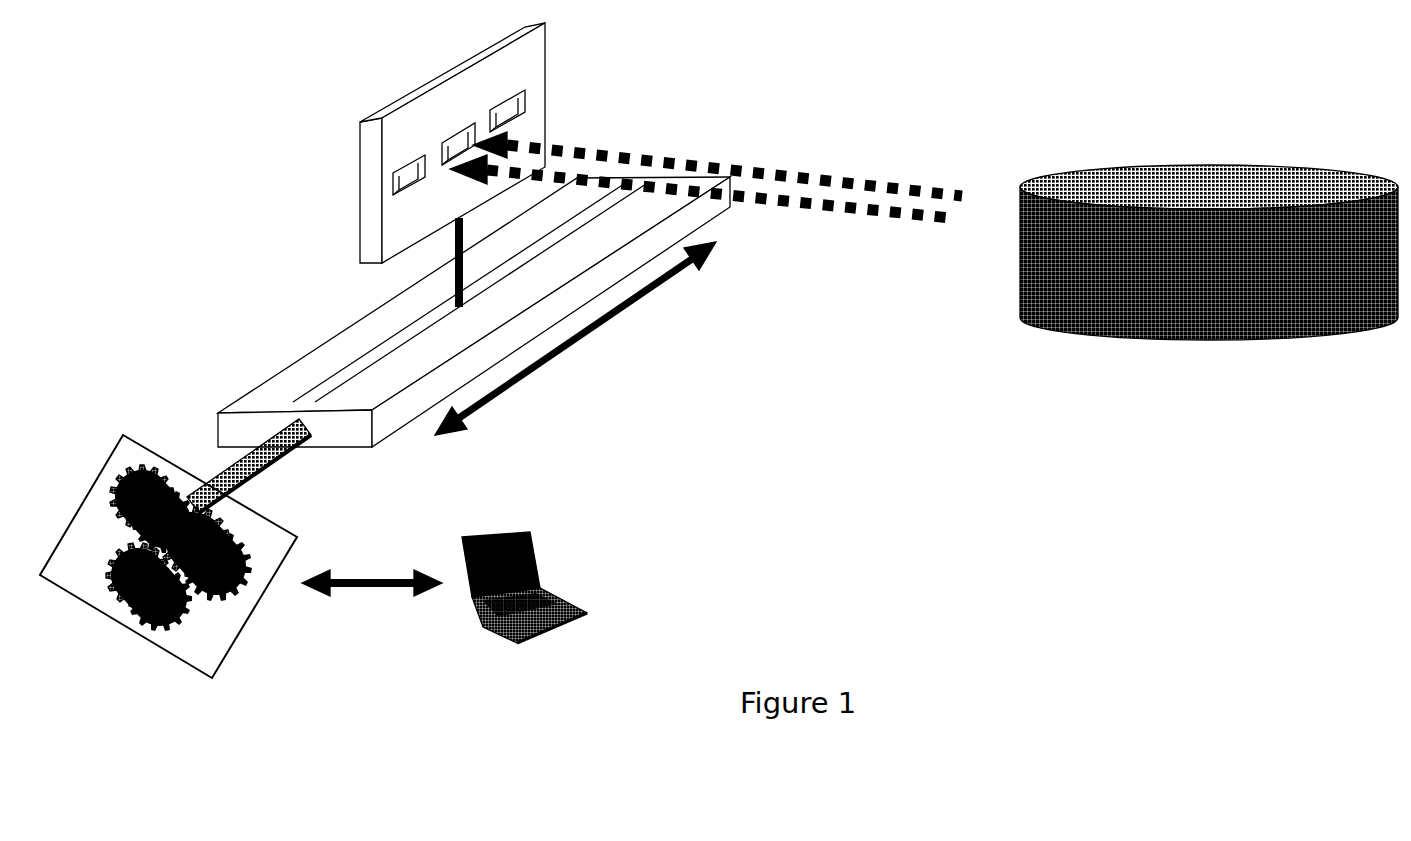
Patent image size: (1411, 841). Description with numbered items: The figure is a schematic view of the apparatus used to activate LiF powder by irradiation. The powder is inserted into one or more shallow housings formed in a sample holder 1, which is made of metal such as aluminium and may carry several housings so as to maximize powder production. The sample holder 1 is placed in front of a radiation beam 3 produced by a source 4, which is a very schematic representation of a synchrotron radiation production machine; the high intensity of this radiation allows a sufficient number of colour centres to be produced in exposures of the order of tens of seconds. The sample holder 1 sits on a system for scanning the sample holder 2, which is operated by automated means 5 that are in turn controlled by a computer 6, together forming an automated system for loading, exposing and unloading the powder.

The sample holder 1 is at (452, 139).
The system for scanning the sample holder 2 is at (463, 312).
The radiation beam 3 is at (706, 149).
The source 4 is at (1209, 215).
The automated means 5 is at (175, 548).
The computer 6 is at (552, 587).